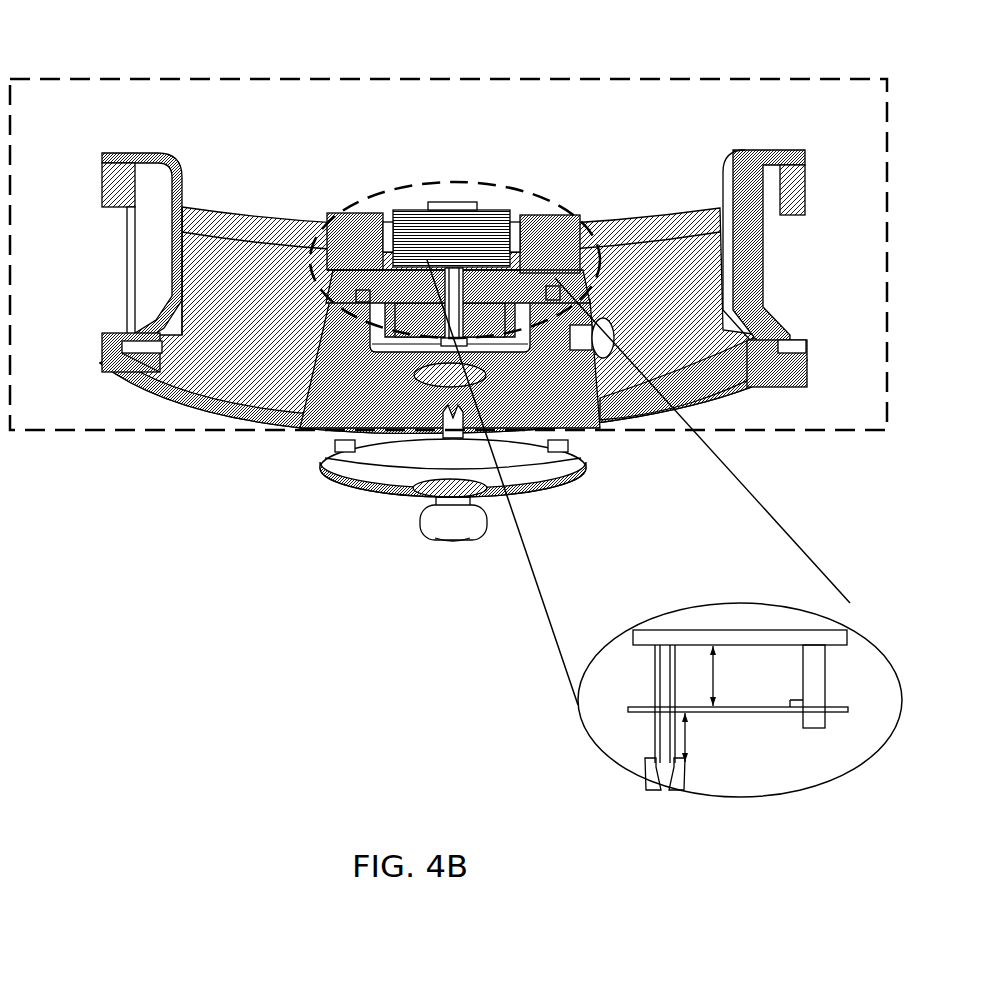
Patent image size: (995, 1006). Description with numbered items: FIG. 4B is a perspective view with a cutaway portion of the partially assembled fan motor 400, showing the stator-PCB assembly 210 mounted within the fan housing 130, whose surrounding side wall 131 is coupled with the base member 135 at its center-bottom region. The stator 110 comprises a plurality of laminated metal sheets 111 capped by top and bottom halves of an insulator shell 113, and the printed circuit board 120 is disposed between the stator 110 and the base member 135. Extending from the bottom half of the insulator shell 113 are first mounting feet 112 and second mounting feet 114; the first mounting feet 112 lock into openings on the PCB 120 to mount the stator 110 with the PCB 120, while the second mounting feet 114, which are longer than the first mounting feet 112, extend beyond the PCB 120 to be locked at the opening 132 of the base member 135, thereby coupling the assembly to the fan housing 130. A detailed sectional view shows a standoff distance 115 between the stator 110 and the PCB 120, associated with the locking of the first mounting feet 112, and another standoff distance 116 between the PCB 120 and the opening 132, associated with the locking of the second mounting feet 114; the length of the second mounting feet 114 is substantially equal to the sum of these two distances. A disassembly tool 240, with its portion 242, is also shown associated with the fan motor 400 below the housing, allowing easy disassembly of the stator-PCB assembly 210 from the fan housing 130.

The partially assembled fan motor 400 is at (324, 66).
The insulator shell 113 is at (389, 270).
The stator-PCB assembly 210 is at (470, 178).
The first mounting feet 112 is at (365, 300).
The stator sub-assembly 110 is at (363, 210).
The laminated metal sheets 111 is at (543, 235).
The second mounting feet 114 is at (448, 318).
The fan housing 130 is at (145, 284).
The surrounding side wall 131 is at (740, 317).
The printed circuit board 120 is at (432, 286).
The base member 135 is at (413, 343).
The opening 132 is at (462, 342).
The disassembly tool 240 is at (368, 455).
The hub 242 is at (453, 427).
The standoff distance 115 is at (732, 676).
The standoff distance 116 is at (707, 737).